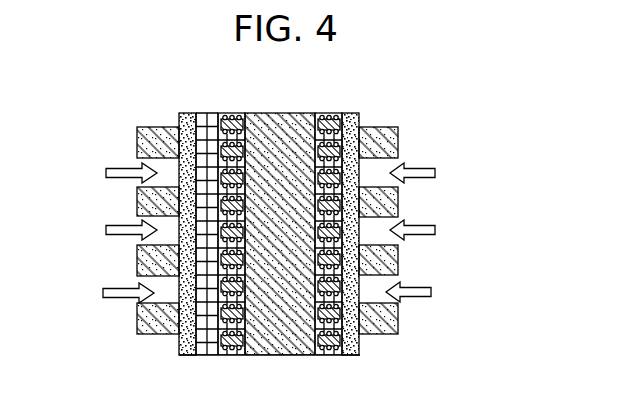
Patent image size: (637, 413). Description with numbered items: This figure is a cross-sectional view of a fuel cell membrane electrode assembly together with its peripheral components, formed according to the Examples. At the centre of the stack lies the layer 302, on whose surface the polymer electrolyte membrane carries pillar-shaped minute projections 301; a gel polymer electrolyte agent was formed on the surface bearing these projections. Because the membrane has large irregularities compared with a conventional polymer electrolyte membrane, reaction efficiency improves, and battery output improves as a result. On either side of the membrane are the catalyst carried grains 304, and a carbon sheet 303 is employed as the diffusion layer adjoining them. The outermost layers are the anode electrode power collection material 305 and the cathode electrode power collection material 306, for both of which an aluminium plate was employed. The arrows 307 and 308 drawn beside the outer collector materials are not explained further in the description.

The pillar-shaped minute projection 301 is at (340, 117).
The heat insulating body 302 is at (293, 177).
The carbon sheet 303 is at (263, 244).
The catalyst carried grains 304 is at (268, 355).
The anode electrode power collection material 305 is at (152, 335).
The cathode electrode power collection material 306 is at (383, 337).
The air flow (first side) 307 is at (112, 177).
The air flow (second side) 308 is at (435, 177).